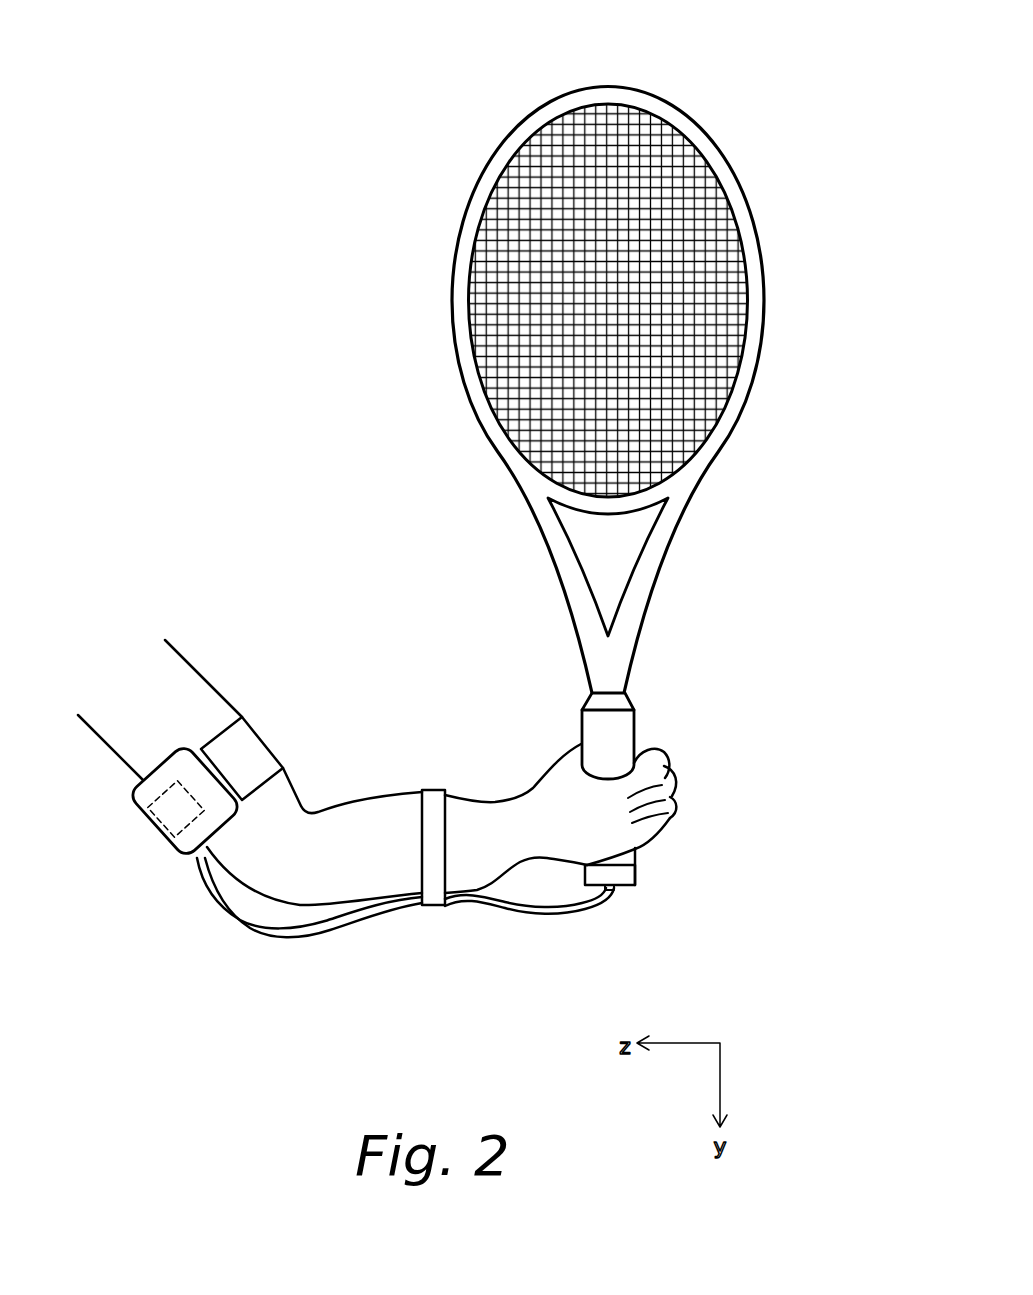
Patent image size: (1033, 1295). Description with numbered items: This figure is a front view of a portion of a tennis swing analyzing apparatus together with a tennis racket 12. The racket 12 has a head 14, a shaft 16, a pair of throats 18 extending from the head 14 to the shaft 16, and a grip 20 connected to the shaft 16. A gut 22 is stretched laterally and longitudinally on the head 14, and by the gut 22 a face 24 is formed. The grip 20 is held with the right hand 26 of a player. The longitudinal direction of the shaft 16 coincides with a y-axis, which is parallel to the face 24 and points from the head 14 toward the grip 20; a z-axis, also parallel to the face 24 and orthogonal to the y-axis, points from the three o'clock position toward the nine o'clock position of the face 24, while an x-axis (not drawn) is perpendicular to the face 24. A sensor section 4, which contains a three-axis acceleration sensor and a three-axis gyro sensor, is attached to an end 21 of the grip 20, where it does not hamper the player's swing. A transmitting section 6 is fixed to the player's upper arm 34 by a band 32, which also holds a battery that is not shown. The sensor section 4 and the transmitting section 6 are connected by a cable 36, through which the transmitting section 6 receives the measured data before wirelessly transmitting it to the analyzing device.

The tennis racket 12 is at (601, 394).
The head 14 is at (493, 152).
The shaft 16 is at (612, 658).
The throats 18 is at (580, 575).
The grip 20 is at (612, 730).
The gut 22 is at (717, 283).
The face 24 is at (601, 300).
The right hand 26 is at (627, 798).
The end of the grip 21 is at (634, 857).
The sensor section 4 is at (625, 878).
The band 32 is at (248, 750).
The upper arm 34 is at (163, 672).
The transmitting section 6 is at (160, 815).
The cable 36 is at (297, 938).